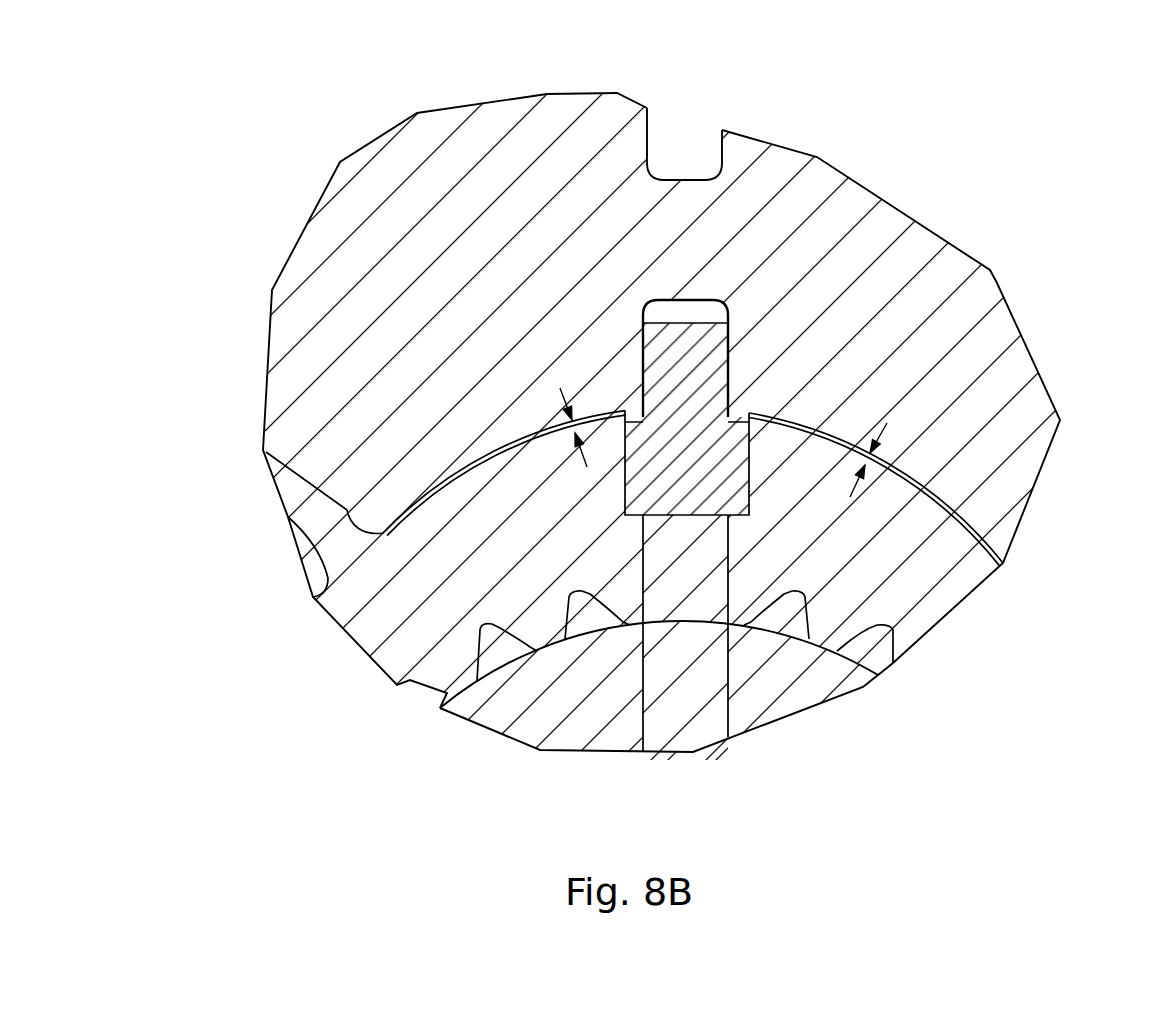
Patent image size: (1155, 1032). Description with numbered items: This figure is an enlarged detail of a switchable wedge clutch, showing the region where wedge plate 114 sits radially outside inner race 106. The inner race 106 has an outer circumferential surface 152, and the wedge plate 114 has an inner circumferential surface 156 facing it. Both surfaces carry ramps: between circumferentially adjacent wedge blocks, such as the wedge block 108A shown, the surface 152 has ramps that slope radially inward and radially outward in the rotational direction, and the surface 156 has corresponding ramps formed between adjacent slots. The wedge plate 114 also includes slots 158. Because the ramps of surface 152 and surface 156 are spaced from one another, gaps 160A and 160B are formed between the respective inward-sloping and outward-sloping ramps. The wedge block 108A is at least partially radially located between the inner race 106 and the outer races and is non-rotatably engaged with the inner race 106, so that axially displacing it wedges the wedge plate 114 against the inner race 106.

The wedge plate 114 is at (580, 93).
The inner race 106 is at (350, 647).
The fastener stud 108A is at (683, 323).
The outer circumferential surface 152 is at (957, 527).
The inner circumferential surface 156 is at (487, 462).
The slots 158 is at (280, 453).
The gap 160A is at (893, 443).
The gap 160B is at (562, 392).